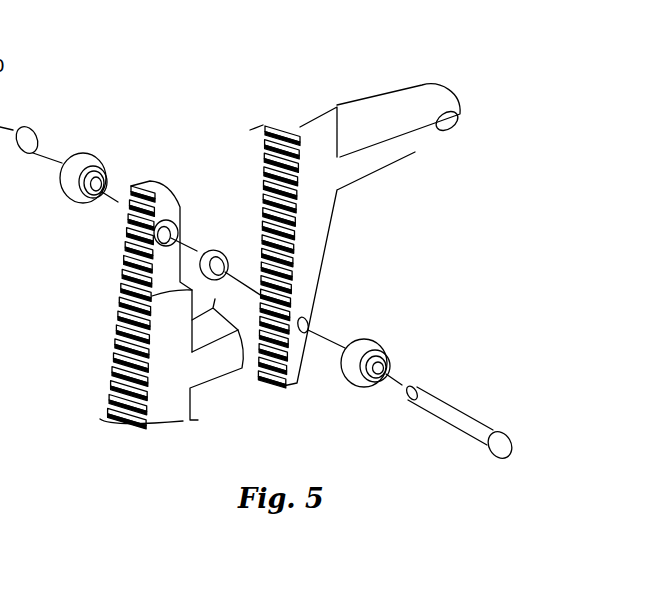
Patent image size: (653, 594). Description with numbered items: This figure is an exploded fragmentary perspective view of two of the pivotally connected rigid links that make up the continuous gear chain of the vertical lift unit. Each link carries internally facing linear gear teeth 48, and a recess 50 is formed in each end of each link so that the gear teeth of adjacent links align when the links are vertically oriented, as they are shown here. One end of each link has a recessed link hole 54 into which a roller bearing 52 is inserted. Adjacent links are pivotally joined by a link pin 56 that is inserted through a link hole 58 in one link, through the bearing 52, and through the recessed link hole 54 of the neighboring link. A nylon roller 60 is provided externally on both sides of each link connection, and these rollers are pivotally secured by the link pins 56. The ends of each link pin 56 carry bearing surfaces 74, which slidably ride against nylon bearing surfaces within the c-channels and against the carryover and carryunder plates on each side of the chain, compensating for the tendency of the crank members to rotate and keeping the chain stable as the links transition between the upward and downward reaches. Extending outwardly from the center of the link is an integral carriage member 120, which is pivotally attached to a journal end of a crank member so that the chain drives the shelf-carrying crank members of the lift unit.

The linear gear teeth 48 is at (118, 342).
The recess 50 is at (187, 257).
The roller bearing 52 is at (213, 250).
The recessed link hole 54 is at (166, 232).
The link pin 56 is at (450, 402).
The link hole 58 is at (311, 322).
The nylon roller 60 is at (97, 155).
The bearing surface 74 is at (32, 128).
The carriage member 120 is at (359, 199).